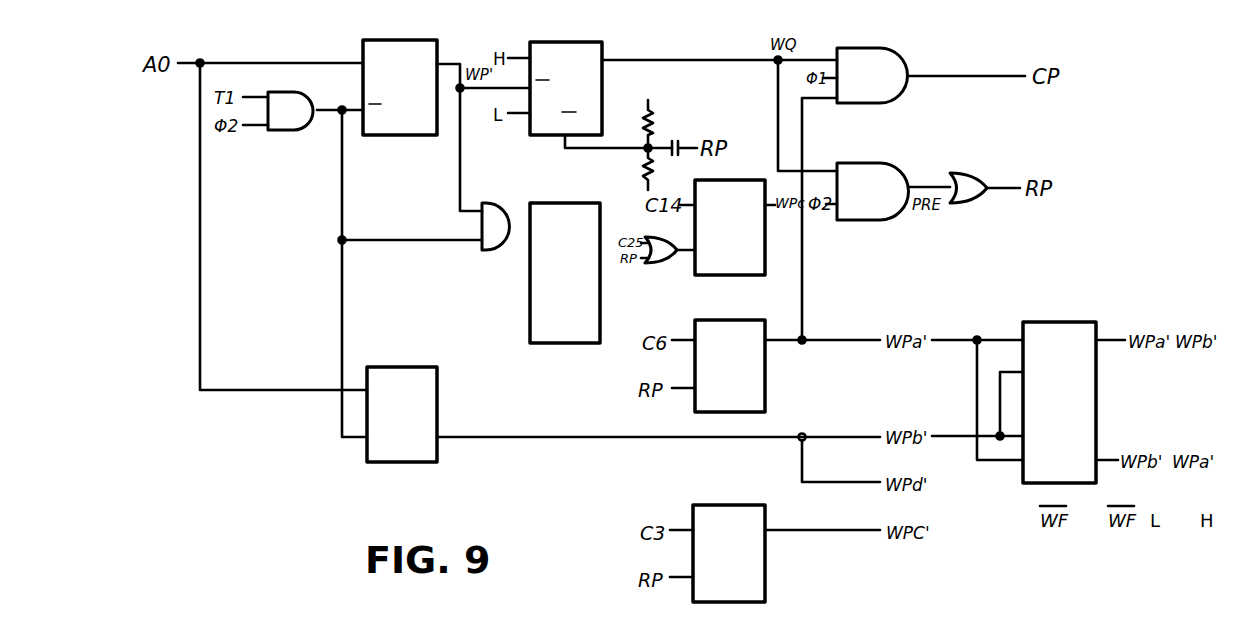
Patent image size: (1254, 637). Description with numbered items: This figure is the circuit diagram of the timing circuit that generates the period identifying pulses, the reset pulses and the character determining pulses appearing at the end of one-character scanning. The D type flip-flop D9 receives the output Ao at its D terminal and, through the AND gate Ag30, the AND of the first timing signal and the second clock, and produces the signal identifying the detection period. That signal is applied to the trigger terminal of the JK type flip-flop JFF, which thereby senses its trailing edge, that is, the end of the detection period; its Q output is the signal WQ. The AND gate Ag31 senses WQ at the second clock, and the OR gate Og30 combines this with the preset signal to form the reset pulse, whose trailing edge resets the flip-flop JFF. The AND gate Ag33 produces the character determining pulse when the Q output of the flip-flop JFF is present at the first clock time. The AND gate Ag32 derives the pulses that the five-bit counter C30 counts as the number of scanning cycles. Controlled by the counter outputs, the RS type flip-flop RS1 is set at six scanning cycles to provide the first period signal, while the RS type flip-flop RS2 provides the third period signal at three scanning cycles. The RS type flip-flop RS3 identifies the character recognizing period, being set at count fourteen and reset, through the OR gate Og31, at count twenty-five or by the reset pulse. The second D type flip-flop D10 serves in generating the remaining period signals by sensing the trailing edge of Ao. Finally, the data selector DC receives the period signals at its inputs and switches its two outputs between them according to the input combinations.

The D type flip-flop D9 is at (411, 30).
The D type flip-flop D10 is at (399, 367).
The JK type flip-flop JFF is at (567, 42).
The AND gate Ag30 is at (306, 128).
The AND gate Ag31 is at (866, 220).
The AND gate Ag32 is at (490, 250).
The AND gate Ag33 is at (877, 103).
The OR gate Og30 is at (978, 203).
The OR gate Og31 is at (662, 263).
The 5-bit counter C30 is at (543, 343).
The RS type flip-flop RS1 is at (765, 400).
The RS type flip-flop RS2 is at (765, 588).
The RS type flip-flop RS3 is at (762, 275).
The data selector DC is at (1062, 322).